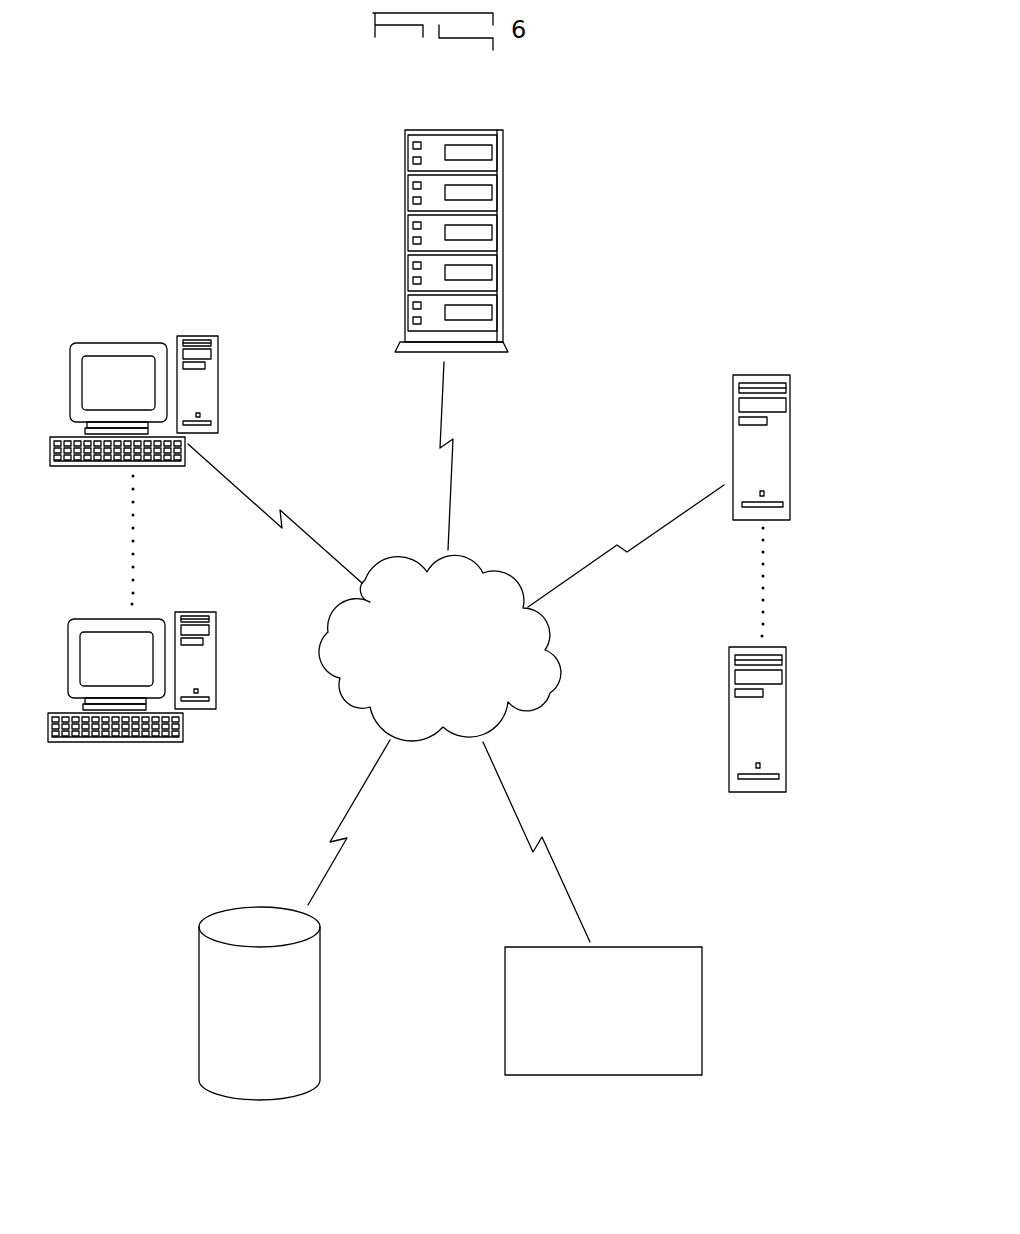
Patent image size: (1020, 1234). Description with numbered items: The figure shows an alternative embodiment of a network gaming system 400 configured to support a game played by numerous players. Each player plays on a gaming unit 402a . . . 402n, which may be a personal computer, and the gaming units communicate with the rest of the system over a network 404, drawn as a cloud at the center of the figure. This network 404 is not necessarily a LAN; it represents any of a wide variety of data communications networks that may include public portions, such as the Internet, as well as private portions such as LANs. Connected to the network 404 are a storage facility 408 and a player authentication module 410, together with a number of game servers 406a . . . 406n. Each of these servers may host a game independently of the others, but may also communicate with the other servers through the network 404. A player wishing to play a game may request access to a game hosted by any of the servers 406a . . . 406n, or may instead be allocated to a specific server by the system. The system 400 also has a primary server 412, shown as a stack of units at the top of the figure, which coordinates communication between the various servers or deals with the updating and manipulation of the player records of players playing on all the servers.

The network gaming system 400 is at (575, 408).
The gaming unit 402a is at (125, 562).
The gaming unit 402n is at (124, 718).
The network 404 is at (527, 678).
The game server 406a is at (801, 640).
The game server 406n is at (776, 818).
The storage facility 408 is at (297, 1044).
The player authentication module 410 is at (671, 965).
The primary server 412 is at (492, 244).